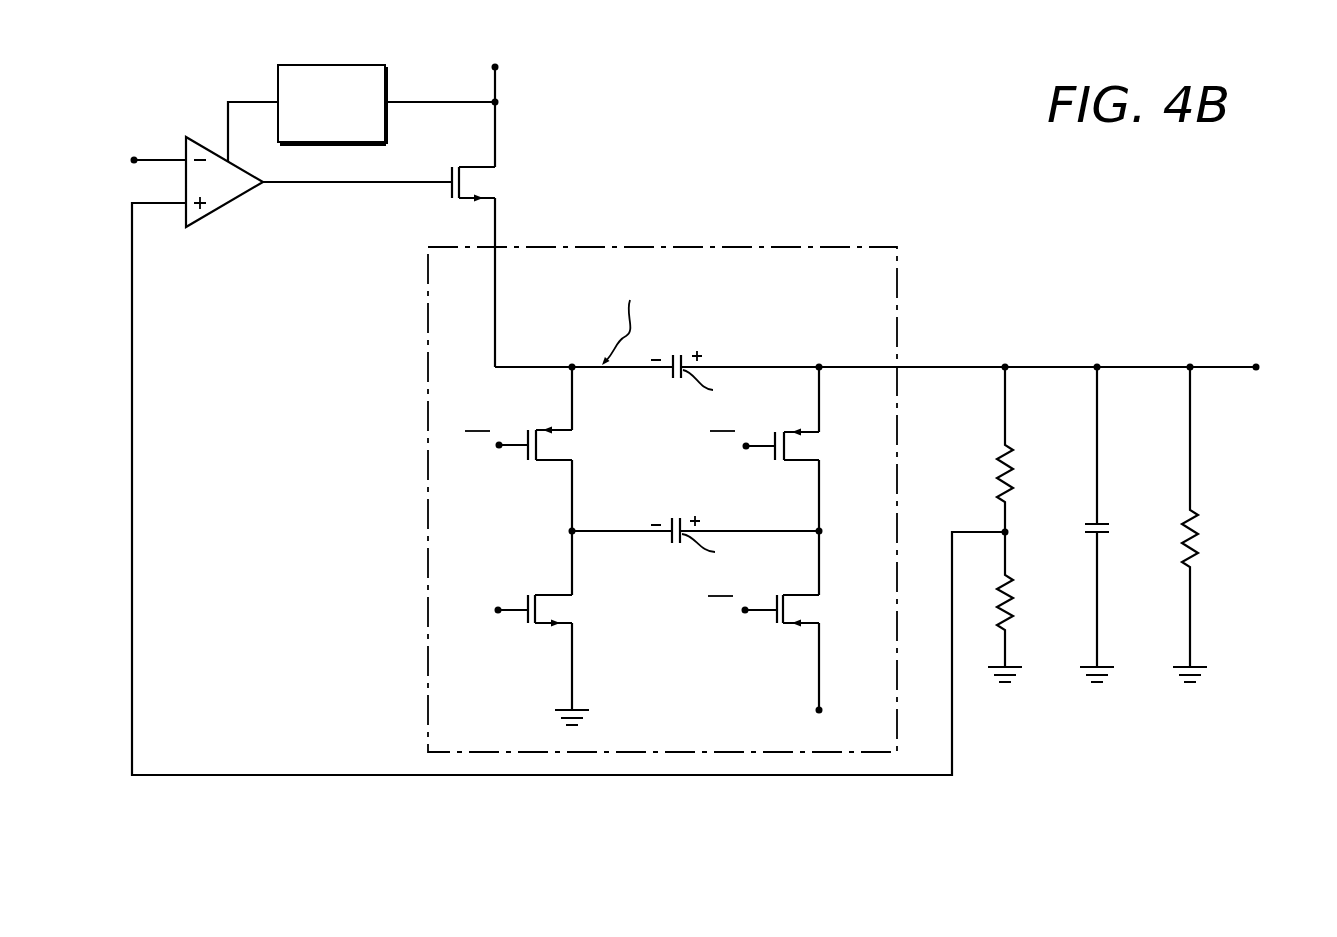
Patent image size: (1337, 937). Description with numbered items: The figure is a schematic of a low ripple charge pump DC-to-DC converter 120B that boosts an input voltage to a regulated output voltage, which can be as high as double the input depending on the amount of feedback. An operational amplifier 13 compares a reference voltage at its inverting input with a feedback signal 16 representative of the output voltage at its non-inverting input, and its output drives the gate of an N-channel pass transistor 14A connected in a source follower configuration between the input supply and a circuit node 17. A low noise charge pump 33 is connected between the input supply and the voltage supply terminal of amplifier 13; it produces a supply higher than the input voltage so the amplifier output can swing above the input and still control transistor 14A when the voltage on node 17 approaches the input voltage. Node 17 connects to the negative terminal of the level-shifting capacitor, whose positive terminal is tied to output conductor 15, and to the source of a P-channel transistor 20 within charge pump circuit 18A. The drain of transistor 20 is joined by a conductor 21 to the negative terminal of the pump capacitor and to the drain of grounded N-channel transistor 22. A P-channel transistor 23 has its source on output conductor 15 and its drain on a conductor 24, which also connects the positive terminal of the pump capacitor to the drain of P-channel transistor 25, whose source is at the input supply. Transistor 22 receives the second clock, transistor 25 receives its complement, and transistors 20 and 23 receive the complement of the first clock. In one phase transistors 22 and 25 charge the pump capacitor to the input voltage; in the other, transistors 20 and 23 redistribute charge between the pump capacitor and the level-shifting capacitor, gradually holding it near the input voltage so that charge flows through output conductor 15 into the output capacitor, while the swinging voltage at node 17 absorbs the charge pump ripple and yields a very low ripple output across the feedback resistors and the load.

The operational amplifier 13 is at (225, 197).
The low noise charge pump 33 is at (278, 82).
The N-channel pass transistor 14A is at (467, 182).
The output conductor 15 is at (1130, 367).
The feedback signal 16 is at (133, 597).
The circuit node 17 is at (513, 367).
The charge pump circuit 18A is at (428, 588).
The P-channel transistor 20 is at (540, 446).
The conductor 21 is at (593, 531).
The N-channel transistor 22 is at (540, 612).
The P-channel transistor 23 is at (790, 446).
The conductor 24 is at (822, 530).
The P-channel transistor 25 is at (790, 613).
The DC-to-DC converter 120B is at (344, 826).